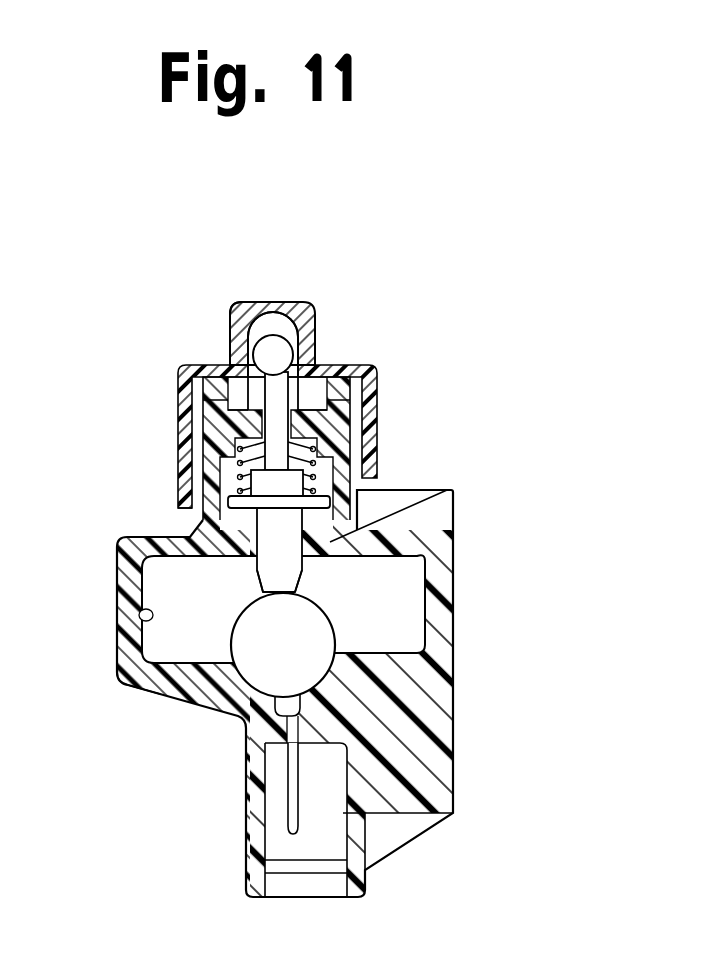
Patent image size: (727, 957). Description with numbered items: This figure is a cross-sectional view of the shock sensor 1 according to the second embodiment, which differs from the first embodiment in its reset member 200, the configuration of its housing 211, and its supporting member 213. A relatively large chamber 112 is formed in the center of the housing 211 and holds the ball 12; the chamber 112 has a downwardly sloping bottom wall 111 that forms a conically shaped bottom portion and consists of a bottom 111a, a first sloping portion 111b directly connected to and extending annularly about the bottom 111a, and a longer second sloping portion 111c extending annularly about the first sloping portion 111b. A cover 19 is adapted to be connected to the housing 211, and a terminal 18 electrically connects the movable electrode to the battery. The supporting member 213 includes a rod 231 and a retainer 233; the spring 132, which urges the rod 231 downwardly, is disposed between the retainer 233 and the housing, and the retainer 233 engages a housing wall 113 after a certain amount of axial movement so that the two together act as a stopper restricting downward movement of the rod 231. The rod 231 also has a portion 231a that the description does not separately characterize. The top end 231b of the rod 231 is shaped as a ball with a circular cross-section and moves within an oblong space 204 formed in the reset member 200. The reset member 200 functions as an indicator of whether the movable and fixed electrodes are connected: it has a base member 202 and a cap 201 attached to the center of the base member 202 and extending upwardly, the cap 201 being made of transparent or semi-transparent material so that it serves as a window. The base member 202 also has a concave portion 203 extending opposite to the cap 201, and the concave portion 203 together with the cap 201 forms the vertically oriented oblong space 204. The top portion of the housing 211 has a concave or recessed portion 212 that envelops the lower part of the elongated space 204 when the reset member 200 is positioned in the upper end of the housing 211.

The shock sensor 1 is at (408, 460).
The ball 12 is at (320, 635).
The terminal 18 is at (297, 797).
The cover 19 is at (125, 560).
The downwardly sloping bottom wall 111 is at (252, 690).
The bottom 111a is at (250, 745).
The first sloping portion 111b is at (268, 703).
The second sloping portion 111c is at (138, 688).
The chamber 112 is at (140, 617).
The housing wall 113 is at (447, 490).
The spring 132 is at (190, 410).
The reset member 200 is at (250, 299).
The cap 201 is at (295, 356).
The base member 202 is at (352, 368).
The concave portion 203 is at (366, 410).
The oblong space 204 is at (283, 322).
The housing 211 is at (428, 694).
The concave portion of housing 212 is at (376, 384).
The supporting member 213 is at (301, 374).
The rod 231 is at (270, 528).
The tapered portion of valve rod 231a is at (303, 576).
The top end of the rod 231b is at (230, 322).
The retainer 233 is at (240, 465).